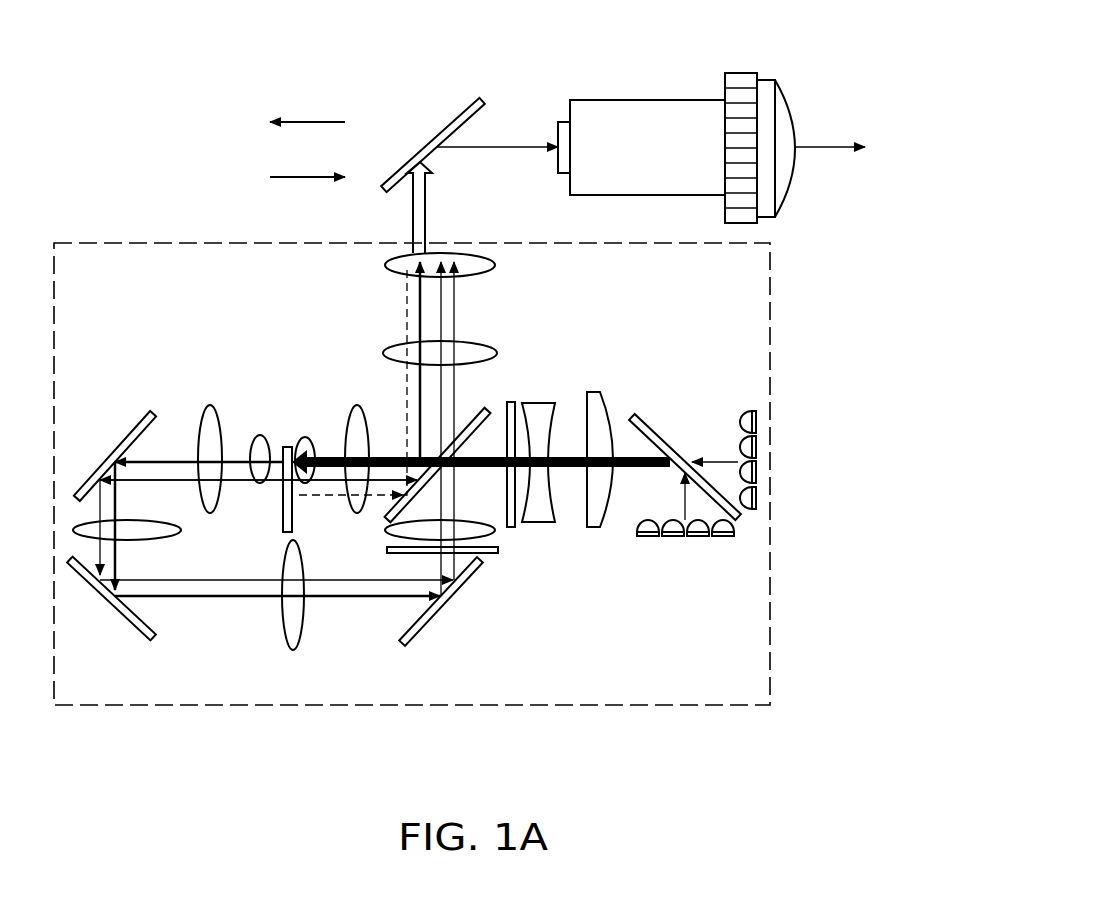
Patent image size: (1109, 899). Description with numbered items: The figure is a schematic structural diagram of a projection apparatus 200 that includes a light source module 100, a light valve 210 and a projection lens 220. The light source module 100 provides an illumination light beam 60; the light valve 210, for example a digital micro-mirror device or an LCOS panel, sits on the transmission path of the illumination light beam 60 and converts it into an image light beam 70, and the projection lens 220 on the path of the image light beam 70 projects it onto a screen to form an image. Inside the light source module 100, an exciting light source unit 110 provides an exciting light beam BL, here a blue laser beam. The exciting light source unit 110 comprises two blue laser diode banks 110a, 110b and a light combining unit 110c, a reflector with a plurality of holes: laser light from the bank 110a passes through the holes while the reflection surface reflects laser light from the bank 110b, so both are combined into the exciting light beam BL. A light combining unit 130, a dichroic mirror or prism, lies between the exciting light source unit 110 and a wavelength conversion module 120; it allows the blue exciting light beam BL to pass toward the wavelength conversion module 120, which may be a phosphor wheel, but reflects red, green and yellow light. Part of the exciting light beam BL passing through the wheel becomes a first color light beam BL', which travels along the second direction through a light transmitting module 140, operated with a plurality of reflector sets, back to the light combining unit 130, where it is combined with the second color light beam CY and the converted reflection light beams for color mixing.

The light source module 100 is at (637, 712).
The projection apparatus 200 is at (750, 780).
The exciting light source unit 110 is at (762, 470).
The blue laser diode bank 110a is at (733, 530).
The blue laser diode bank 110b is at (793, 462).
The light combining unit 110c is at (640, 423).
The wavelength conversion module 120 is at (285, 525).
The light combining unit 130 is at (483, 407).
The light transmitting module 140 is at (132, 430).
The illumination light beam 60 is at (428, 192).
The image light beam 70 is at (520, 147).
The light valve 210 is at (450, 125).
The projection lens 220 is at (640, 110).